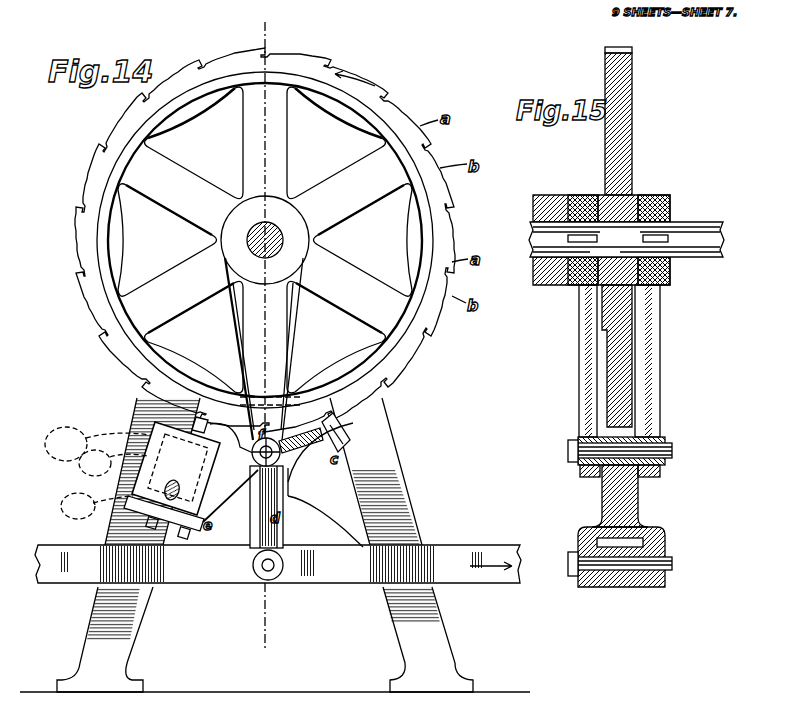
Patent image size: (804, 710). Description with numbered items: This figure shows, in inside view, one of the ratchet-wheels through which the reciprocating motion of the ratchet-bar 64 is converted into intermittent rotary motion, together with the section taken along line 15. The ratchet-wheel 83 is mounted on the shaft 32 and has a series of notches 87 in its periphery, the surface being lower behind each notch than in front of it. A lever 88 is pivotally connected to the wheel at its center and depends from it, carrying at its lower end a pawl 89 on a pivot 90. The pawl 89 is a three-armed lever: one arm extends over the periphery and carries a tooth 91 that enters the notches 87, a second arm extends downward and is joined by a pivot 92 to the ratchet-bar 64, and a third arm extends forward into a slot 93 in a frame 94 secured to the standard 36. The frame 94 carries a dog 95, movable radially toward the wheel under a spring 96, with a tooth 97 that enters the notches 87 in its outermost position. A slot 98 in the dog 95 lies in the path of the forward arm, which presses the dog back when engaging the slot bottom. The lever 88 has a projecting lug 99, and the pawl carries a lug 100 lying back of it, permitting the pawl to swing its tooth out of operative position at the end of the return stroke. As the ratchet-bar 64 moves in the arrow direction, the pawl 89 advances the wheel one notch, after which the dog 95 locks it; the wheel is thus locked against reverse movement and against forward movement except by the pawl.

In FIG. 14, the section line 15 is at (265, 37).
In FIG. 14, the shaft 32 is at (285, 241).
In FIG. 15, the shaft 32 is at (727, 232).
In FIG. 14, the standard 36 is at (123, 618).
In FIG. 14, the ratchet-bar 64 is at (53, 563).
In FIG. 15, the ratchet-bar 64 is at (660, 546).
In FIG. 14, the ratchet-wheel 83 is at (97, 308).
In FIG. 15, the ratchet-wheel 83 is at (620, 166).
In FIG. 14, the notches 87 is at (387, 93).
In FIG. 15, the notches 87 is at (633, 48).
In FIG. 14, the lever 88 is at (280, 333).
In FIG. 15, the lever 88 is at (578, 350).
In FIG. 14, the pawl 89 is at (291, 490).
In FIG. 15, the pawl 89 is at (617, 492).
In FIG. 14, the pivot 90 is at (303, 462).
In FIG. 15, the pivot 90 is at (672, 448).
In FIG. 14, the tooth 91 is at (332, 425).
In FIG. 14, the pivot 92 is at (293, 585).
In FIG. 14, the slot 93 is at (143, 468).
In FIG. 14, the frame 94 is at (172, 427).
In FIG. 14, the dog 95 is at (252, 458).
In FIG. 14, the spring 96 is at (97, 506).
In FIG. 14, the tooth 97 is at (209, 423).
In FIG. 14, the slot 98 is at (97, 444).
In FIG. 14, the lug 99 is at (206, 492).
In FIG. 15, the lug 99 is at (655, 472).
In FIG. 14, the lug 100 is at (289, 512).